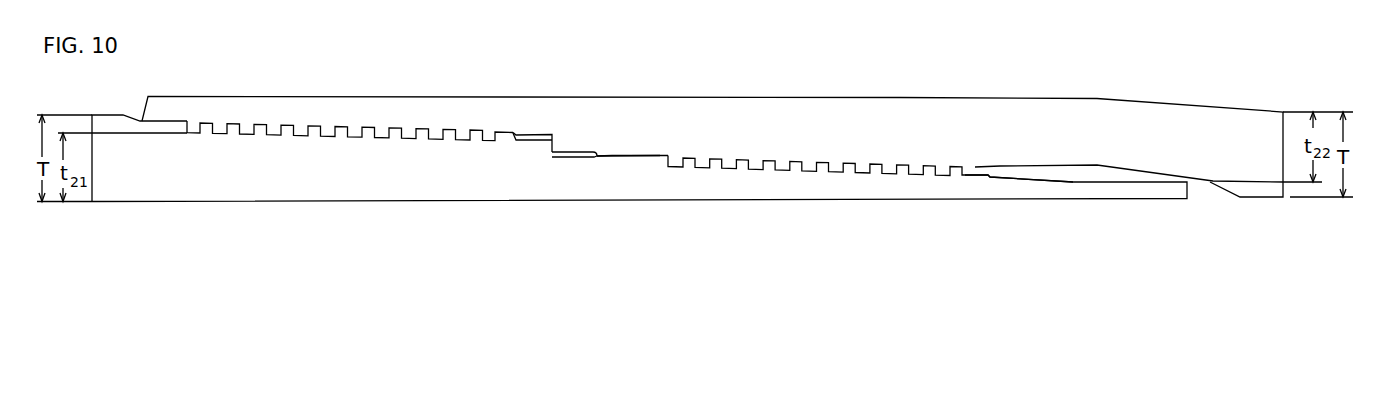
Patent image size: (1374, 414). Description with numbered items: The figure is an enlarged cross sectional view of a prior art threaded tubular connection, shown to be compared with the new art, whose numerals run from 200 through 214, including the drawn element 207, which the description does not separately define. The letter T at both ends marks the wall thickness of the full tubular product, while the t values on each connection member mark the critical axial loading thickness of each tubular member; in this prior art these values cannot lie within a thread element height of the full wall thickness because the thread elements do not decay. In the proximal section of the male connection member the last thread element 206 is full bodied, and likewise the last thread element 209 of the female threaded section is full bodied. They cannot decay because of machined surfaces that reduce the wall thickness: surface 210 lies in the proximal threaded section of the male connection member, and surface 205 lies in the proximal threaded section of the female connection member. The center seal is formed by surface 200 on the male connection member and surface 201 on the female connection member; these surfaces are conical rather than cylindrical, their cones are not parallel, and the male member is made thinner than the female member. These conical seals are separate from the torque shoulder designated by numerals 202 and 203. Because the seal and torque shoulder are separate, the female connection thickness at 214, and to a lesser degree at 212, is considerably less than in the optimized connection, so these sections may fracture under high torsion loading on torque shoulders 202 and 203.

The center seal surface of male connection member 200 is at (618, 158).
The center seal surface of female connection member 201 is at (618, 156).
The torque shoulder 202 is at (552, 145).
The torque shoulder 203 is at (566, 112).
The machined surface of female connection member 205 is at (983, 167).
The last thread element of male connection member 206 is at (206, 124).
The second sheet member 207 is at (141, 120).
The last thread element of female connection member 209 is at (946, 171).
The machined surface of male connection member 210 is at (991, 178).
The female connection thickness 212 is at (498, 97).
The female connection thickness 214 is at (690, 168).